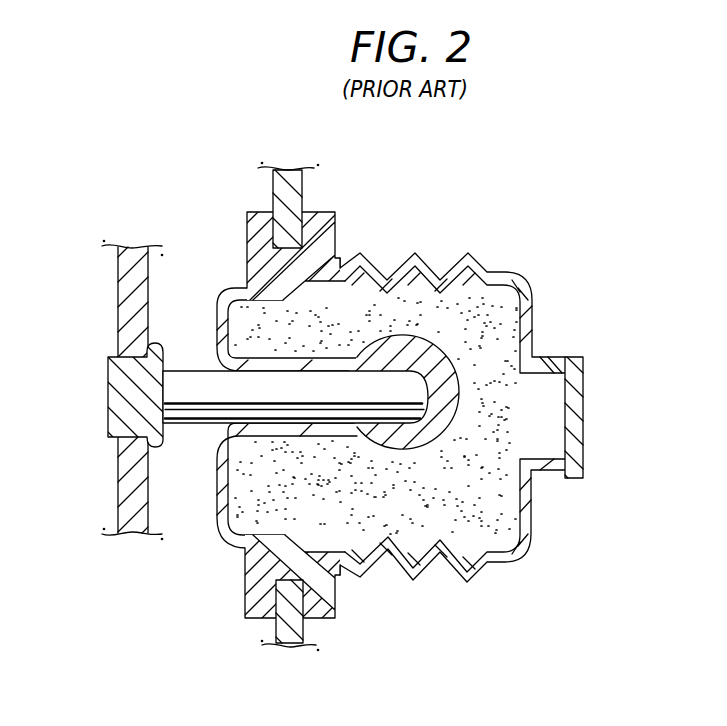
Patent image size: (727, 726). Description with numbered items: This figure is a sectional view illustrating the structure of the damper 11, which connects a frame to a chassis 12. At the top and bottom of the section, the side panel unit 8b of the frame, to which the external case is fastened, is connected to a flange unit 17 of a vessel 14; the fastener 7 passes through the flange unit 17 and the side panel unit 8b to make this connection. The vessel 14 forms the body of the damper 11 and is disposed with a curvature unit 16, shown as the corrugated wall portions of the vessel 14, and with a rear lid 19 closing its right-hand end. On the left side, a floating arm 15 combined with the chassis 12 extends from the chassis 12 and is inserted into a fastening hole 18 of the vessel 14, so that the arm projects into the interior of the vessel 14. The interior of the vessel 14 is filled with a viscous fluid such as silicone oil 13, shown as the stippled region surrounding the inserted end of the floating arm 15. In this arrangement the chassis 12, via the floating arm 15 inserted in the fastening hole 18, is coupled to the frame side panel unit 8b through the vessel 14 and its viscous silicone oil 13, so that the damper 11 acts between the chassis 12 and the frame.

The bolt 7 is at (270, 193).
The side panel unit 8b is at (304, 190).
The damper 11 is at (418, 590).
The chassis 12 is at (116, 284).
The silicone oil 13 is at (507, 548).
The vessel 14 is at (540, 287).
The floating arm 15 is at (190, 426).
The curvature unit 16 is at (440, 268).
The flange unit 17 is at (336, 248).
The fastening hole 18 is at (243, 378).
The rear lid 19 is at (583, 417).